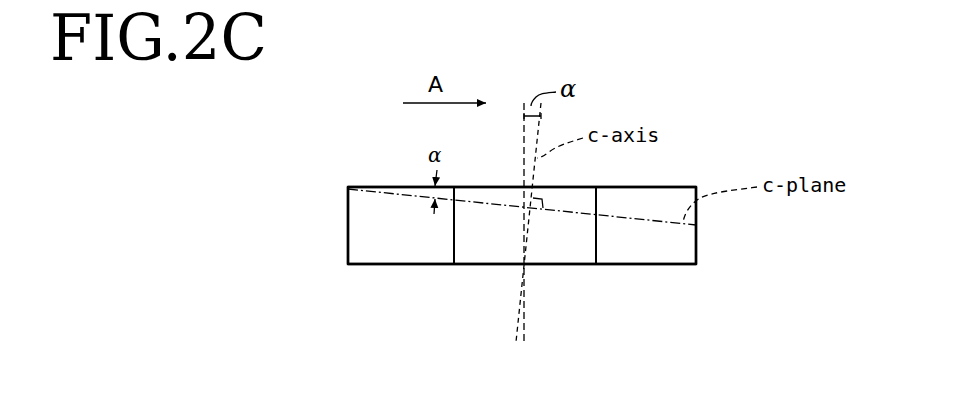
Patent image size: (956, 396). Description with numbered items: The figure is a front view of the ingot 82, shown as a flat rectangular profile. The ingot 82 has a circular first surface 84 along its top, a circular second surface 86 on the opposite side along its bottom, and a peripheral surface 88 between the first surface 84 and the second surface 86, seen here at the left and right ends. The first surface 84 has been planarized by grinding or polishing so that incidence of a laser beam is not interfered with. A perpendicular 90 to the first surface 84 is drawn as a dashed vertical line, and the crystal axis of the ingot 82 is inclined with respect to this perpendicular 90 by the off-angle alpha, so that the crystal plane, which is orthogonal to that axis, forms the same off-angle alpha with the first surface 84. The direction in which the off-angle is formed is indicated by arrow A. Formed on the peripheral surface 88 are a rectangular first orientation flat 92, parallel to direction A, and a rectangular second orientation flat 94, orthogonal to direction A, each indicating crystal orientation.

The ingot 82 is at (345, 204).
The first surface 84 is at (683, 187).
The second surface 86 is at (376, 265).
The peripheral surface 88 is at (357, 229).
The perpendicular 90 is at (523, 147).
The first orientation flat 92 is at (563, 249).
The second orientation flat 94 is at (697, 245).